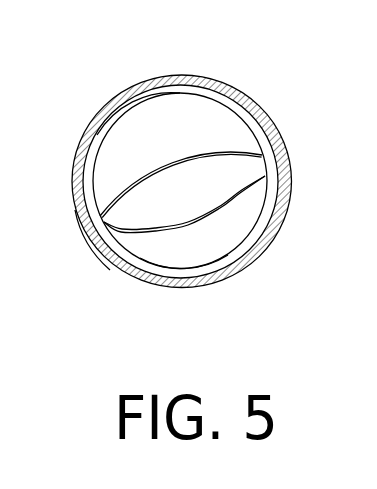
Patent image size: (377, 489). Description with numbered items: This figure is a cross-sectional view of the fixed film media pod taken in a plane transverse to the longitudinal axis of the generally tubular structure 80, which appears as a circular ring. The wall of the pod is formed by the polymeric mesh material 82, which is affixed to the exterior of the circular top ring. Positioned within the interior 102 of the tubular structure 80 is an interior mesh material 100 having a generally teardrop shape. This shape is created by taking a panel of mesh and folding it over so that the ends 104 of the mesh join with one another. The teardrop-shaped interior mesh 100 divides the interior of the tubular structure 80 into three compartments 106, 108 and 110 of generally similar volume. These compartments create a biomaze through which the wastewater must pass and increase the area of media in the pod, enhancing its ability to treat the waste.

The tubular structure 80 is at (268, 237).
The polymeric mesh material 82 is at (173, 75).
The interior mesh material 100 is at (222, 148).
The interior 102 is at (137, 128).
The ends 104 is at (83, 232).
The compartment 106 is at (271, 45).
The compartment 108 is at (206, 202).
The compartment 110 is at (175, 257).